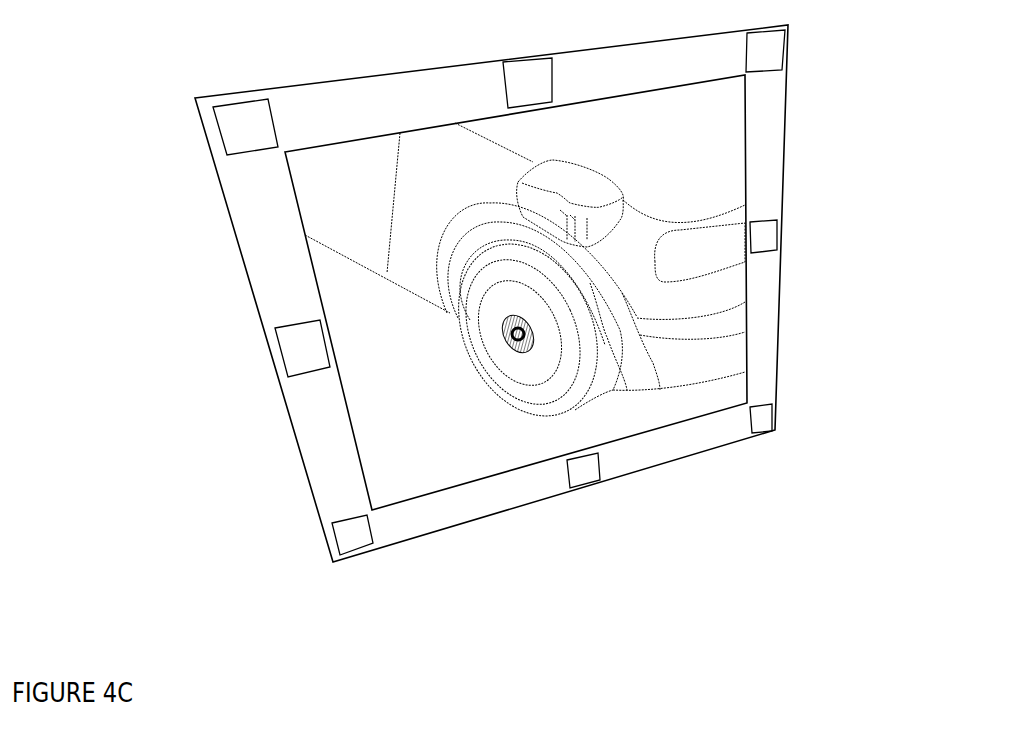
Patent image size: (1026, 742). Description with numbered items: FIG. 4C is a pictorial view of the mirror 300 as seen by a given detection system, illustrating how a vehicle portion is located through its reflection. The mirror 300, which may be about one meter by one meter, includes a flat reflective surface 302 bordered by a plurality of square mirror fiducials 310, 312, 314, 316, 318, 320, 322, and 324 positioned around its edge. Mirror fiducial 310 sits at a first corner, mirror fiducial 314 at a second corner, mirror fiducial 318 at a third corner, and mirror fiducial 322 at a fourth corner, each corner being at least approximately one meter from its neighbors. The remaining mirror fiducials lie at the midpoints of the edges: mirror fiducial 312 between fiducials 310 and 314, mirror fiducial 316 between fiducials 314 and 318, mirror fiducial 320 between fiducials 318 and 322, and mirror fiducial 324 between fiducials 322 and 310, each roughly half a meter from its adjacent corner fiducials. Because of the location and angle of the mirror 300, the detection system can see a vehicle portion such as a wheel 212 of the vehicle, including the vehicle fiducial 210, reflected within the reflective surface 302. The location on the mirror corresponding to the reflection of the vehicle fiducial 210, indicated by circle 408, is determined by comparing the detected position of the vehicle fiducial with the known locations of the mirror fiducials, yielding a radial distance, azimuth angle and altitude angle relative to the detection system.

The mirror 300 is at (238, 244).
The flat reflective surface 302 is at (459, 473).
The mirror fiducial 310 is at (245, 127).
The mirror fiducial 312 is at (527, 83).
The mirror fiducial 314 is at (770, 45).
The mirror fiducial 316 is at (765, 235).
The mirror fiducial 318 is at (762, 422).
The mirror fiducial 320 is at (582, 467).
The mirror fiducial 322 is at (352, 535).
The mirror fiducial 324 is at (302, 348).
The vehicle fiducial 210 is at (512, 339).
The wheel 212 is at (528, 403).
The circle 408 is at (525, 348).